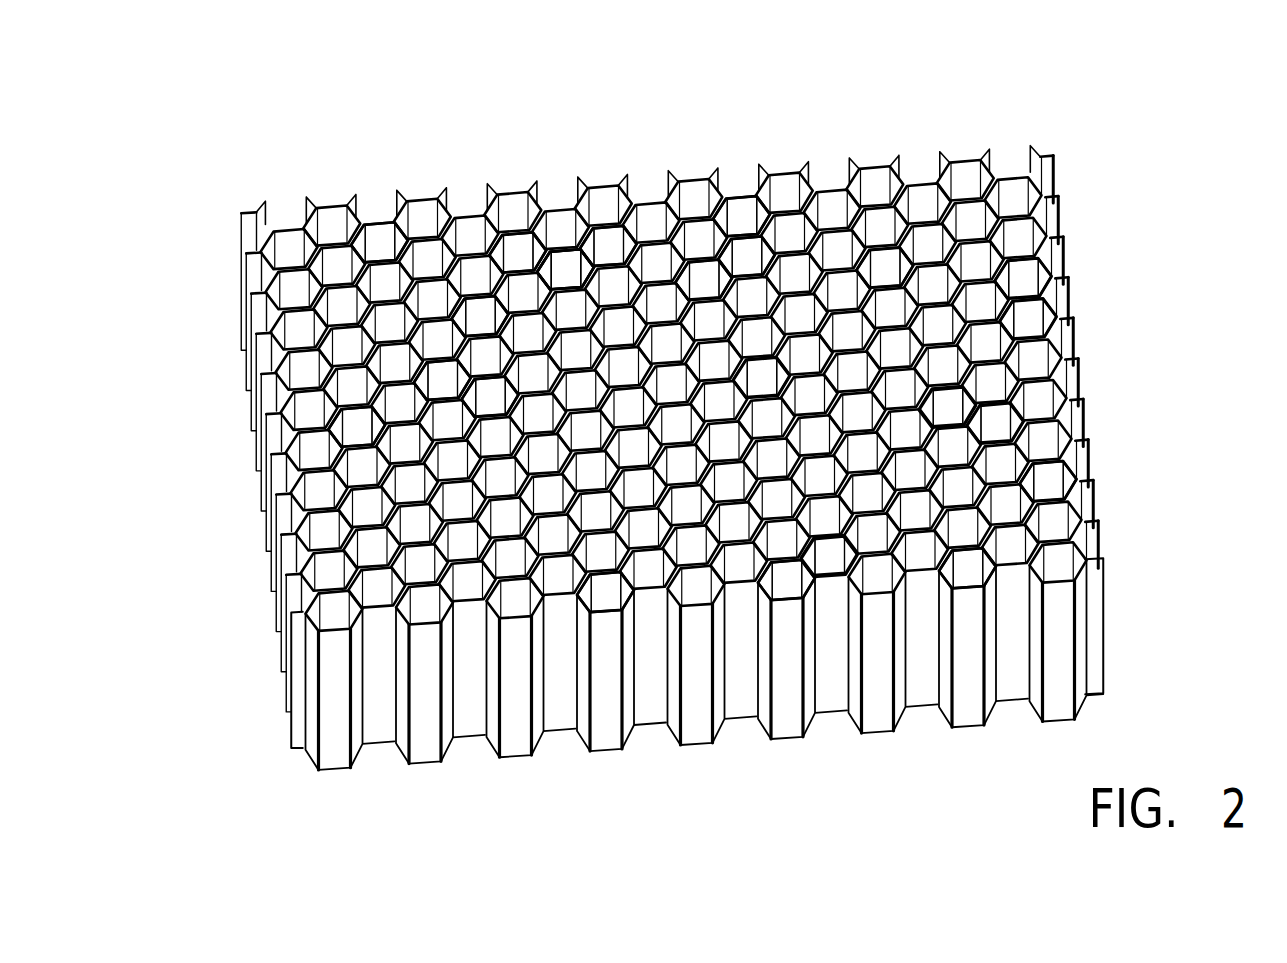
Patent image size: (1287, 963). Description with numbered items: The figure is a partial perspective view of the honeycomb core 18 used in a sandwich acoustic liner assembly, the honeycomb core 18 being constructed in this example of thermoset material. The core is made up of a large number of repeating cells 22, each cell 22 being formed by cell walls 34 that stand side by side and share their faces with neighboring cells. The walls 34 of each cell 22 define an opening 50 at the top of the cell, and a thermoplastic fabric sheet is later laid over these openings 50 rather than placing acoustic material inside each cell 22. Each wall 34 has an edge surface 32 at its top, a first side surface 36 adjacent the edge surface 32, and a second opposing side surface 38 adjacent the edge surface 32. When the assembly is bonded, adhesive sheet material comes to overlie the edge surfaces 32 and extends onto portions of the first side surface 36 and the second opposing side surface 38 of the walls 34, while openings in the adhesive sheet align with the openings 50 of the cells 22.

The honeycomb core 18 is at (1003, 94).
The cell 22 is at (490, 398).
The edge surface 32 is at (594, 272).
The cell wall 34 is at (365, 240).
The first side surface 36 is at (527, 262).
The second opposing side surface 38 is at (567, 262).
The opening 50 is at (482, 312).